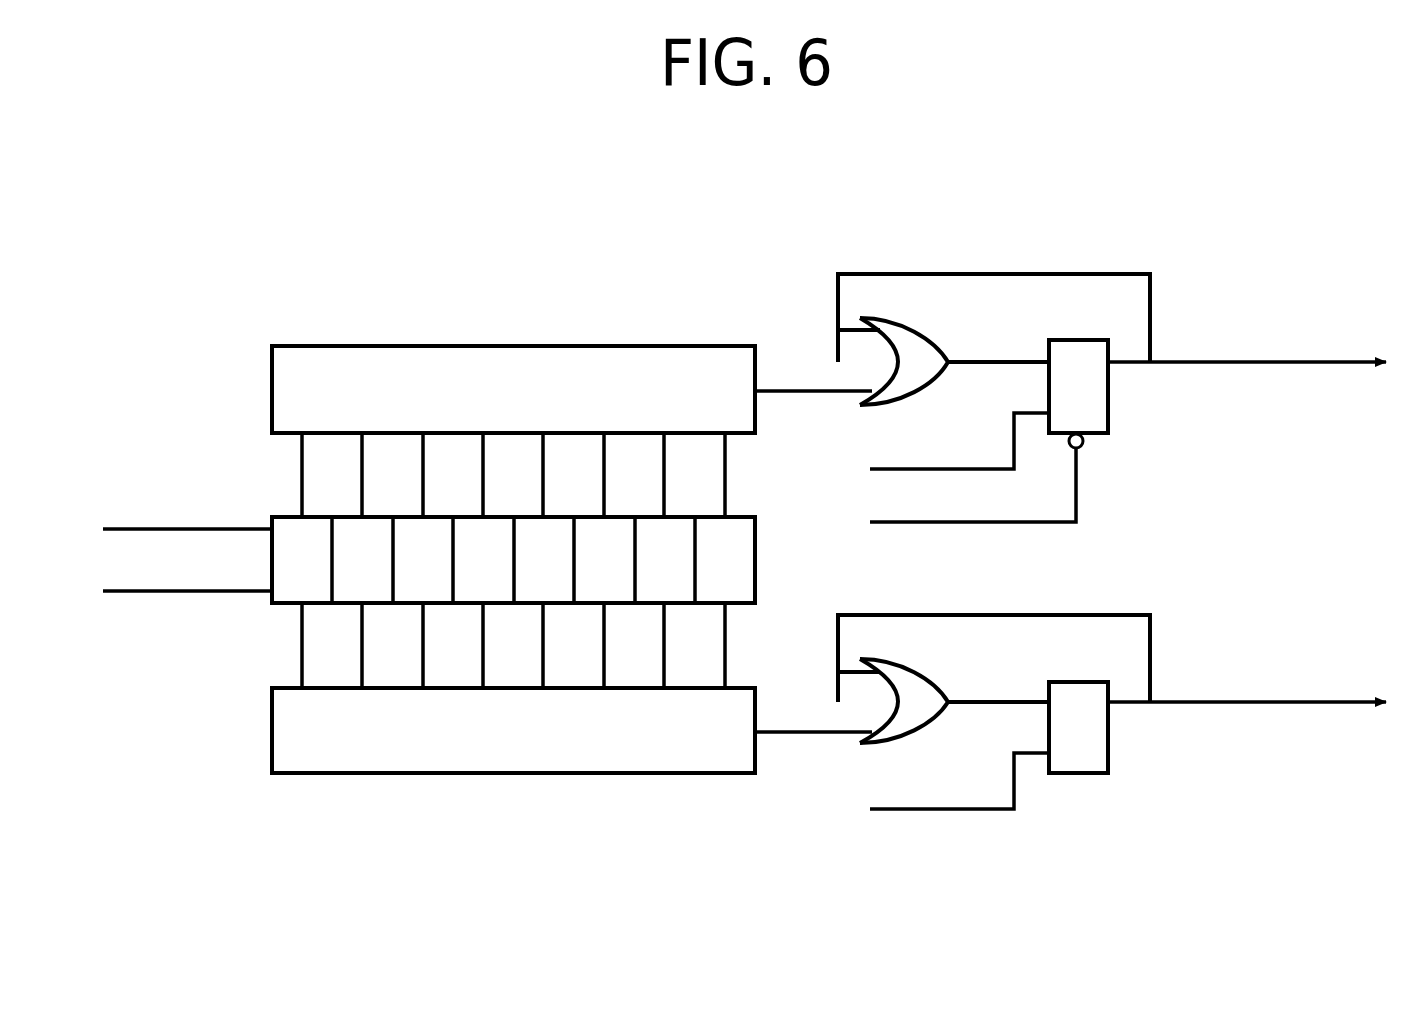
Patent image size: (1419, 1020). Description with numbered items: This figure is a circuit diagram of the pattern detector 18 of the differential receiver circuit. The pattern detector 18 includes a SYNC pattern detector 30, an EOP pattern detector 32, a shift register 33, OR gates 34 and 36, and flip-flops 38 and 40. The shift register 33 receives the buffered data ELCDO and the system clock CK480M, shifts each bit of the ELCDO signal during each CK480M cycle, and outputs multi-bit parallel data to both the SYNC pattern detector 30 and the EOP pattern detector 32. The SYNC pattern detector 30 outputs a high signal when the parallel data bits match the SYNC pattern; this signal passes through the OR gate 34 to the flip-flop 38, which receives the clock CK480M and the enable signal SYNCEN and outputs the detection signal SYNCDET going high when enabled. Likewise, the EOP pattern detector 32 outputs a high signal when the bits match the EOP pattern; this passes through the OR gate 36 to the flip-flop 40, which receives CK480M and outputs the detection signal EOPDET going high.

The pattern detector 18 is at (324, 215).
The SYNC pattern detector 30 is at (640, 346).
The EOP pattern detector 32 is at (640, 776).
The shift register 33 is at (755, 562).
The OR gate 34 is at (934, 337).
The OR gate 36 is at (934, 677).
The flip-flop 38 is at (1108, 400).
The flip-flop 40 is at (1108, 740).